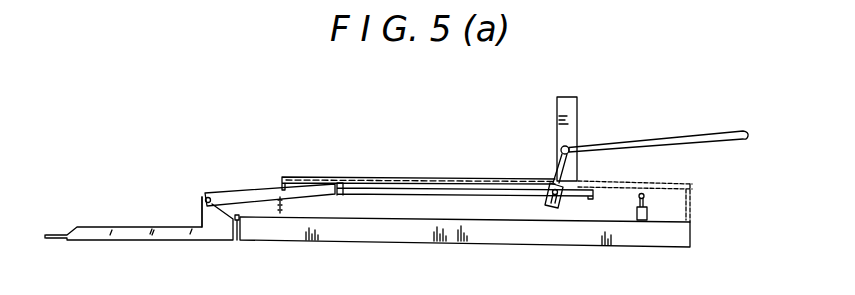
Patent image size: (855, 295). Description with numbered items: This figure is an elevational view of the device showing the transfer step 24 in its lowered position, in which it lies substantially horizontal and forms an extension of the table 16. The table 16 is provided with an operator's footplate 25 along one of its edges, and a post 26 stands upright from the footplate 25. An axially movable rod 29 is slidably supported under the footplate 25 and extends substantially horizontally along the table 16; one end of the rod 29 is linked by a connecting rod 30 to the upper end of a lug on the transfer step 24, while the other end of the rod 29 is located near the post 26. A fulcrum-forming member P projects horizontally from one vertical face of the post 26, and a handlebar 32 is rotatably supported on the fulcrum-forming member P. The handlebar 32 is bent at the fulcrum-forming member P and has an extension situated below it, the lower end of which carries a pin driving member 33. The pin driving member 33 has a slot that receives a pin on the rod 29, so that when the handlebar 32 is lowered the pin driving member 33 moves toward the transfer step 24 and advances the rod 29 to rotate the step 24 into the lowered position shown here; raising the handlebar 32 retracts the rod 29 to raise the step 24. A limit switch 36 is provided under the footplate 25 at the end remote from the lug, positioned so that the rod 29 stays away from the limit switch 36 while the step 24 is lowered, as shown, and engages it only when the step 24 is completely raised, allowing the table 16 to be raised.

The table 16 is at (493, 231).
The transfer step 24 is at (142, 227).
The operator's footplate 25 is at (357, 178).
The post 26 is at (572, 113).
The rod 29 is at (428, 192).
The connecting rod 30 is at (260, 188).
The handlebar 32 is at (648, 140).
The pin driving member 33 is at (558, 210).
The limit switch 36 is at (648, 213).
The fulcrum-forming member P is at (540, 151).